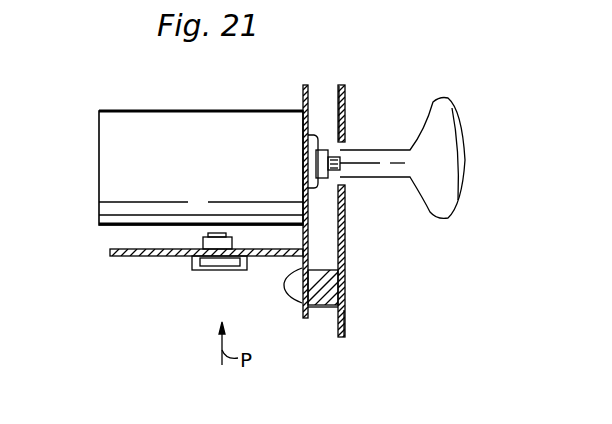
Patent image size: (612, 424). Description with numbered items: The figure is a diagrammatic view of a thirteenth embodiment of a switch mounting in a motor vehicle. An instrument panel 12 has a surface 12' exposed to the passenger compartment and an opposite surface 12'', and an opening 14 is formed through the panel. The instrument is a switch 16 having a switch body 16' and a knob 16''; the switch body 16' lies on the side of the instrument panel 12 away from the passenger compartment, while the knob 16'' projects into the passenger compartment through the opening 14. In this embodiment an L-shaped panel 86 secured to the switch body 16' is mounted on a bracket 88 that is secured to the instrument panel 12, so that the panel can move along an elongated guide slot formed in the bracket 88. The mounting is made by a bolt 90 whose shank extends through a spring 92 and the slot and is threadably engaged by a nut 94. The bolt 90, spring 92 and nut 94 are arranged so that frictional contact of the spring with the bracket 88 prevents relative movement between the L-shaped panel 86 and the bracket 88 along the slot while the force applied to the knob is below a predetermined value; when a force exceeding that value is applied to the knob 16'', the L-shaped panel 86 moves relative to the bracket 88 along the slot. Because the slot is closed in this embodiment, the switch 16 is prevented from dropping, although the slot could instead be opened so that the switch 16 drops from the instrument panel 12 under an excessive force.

The instrument panel 12 is at (361, 232).
The surface 12' is at (369, 319).
The opposite surface 12'' is at (314, 302).
The opening 14 is at (347, 142).
The switch 16 is at (201, 168).
The switch body 16' is at (201, 92).
The knob 16'' is at (406, 178).
The L-shaped panel 86 is at (309, 95).
The bracket 88 is at (145, 257).
The bolt 90 is at (240, 268).
The spring 92 is at (203, 268).
The nut 94 is at (197, 244).